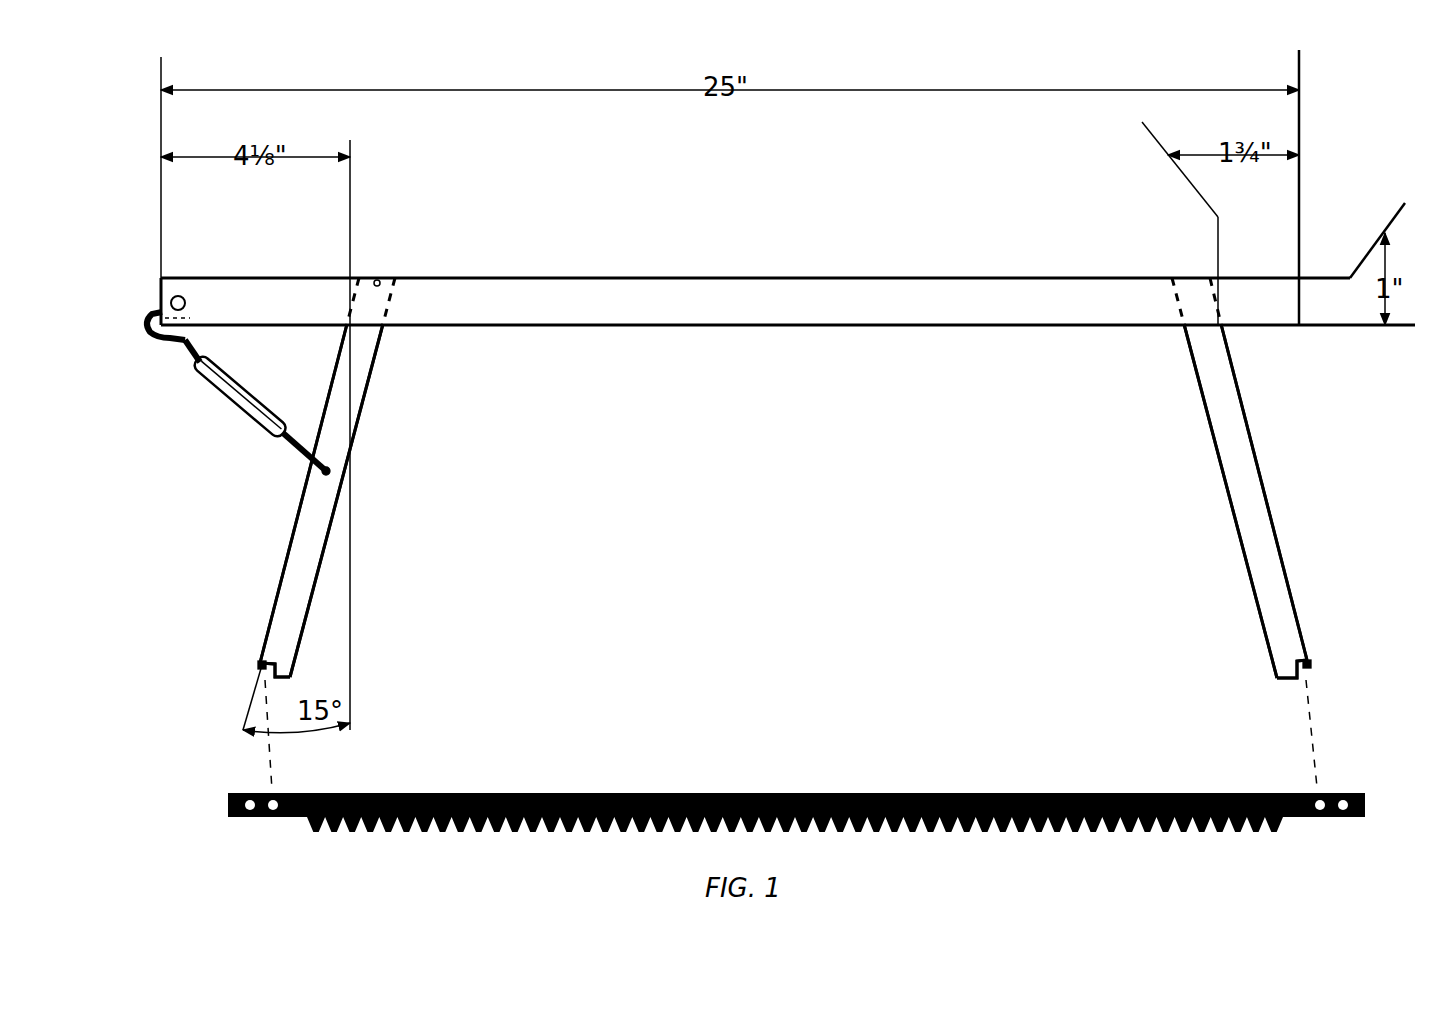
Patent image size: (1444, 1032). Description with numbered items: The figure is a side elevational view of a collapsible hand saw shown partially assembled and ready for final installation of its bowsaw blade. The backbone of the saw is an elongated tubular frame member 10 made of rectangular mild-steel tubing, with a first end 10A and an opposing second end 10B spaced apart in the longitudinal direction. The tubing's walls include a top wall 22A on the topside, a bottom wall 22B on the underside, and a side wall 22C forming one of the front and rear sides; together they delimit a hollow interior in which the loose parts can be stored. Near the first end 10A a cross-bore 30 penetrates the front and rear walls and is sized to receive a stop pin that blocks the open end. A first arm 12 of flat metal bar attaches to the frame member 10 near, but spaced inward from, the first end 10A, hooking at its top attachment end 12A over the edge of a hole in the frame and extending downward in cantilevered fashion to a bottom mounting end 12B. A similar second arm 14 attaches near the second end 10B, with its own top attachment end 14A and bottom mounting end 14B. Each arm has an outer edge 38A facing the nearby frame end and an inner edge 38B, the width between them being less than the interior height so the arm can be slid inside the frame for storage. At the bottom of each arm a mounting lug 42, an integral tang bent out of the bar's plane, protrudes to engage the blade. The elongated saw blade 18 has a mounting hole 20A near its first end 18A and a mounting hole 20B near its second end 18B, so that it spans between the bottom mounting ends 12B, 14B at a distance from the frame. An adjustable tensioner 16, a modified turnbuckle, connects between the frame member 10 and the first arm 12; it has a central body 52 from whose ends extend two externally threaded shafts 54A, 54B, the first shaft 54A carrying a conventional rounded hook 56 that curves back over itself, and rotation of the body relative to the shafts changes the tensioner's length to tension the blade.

The tubular frame member 10 is at (757, 293).
The first end of the frame member 10A is at (160, 296).
The second end of the frame member 10B is at (1303, 307).
The first arm 12 is at (334, 505).
The top attachment end of the first arm 12A is at (369, 273).
The bottom mounting end of the first arm 12B is at (277, 678).
The second arm 14 is at (1253, 506).
The top attachment end of the second arm 14A is at (1210, 277).
The bottom mounting end of the second arm 14B is at (1278, 687).
The adjustable tensioner 16 is at (221, 414).
The saw blade 18 is at (802, 796).
The first end of the saw blade 18A is at (228, 807).
The second end of the saw blade 18B is at (1367, 802).
The first mounting hole 20A is at (273, 814).
The second mounting hole 20B is at (1343, 814).
The top wall 22A is at (520, 278).
The bottom wall 22B is at (510, 328).
The side wall 22C is at (603, 310).
The cross-bore 30 is at (186, 300).
The outer edge of the arm 38A is at (275, 600).
The inner edge of the arm 38B is at (367, 398).
The mounting lug 42 is at (258, 667).
The central body of the tensioner 52 is at (233, 387).
The first threaded shaft 54A is at (188, 357).
The second threaded shaft 54B is at (292, 448).
The rounded hook 56 is at (147, 342).